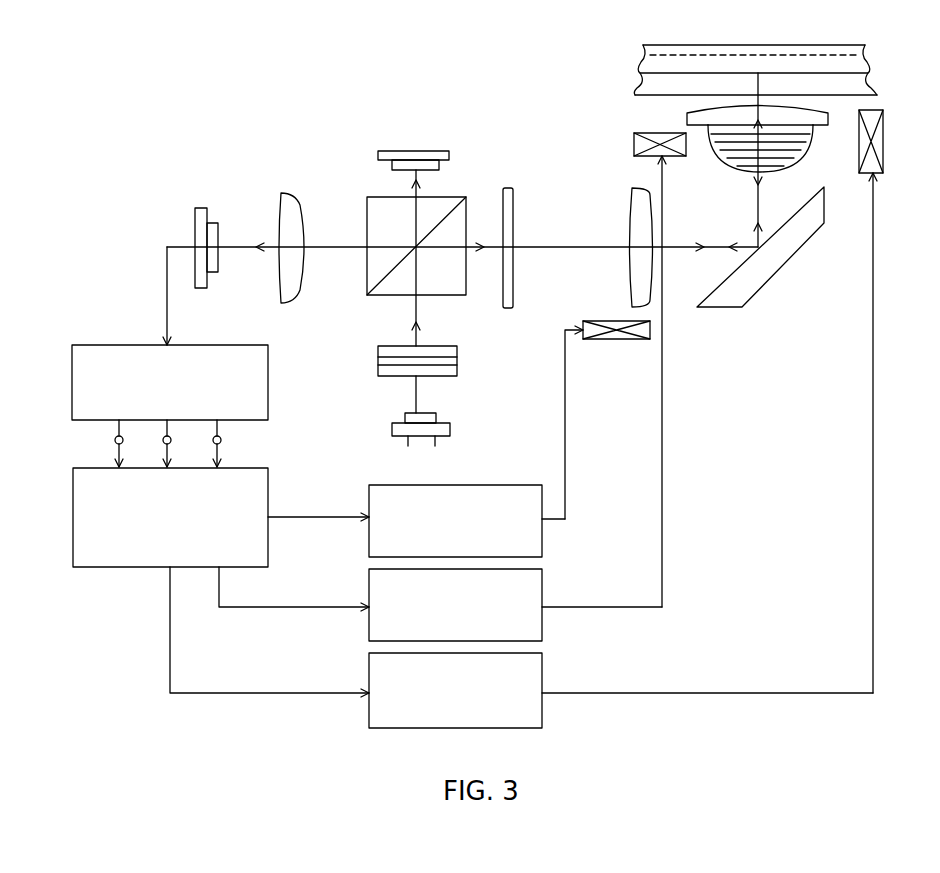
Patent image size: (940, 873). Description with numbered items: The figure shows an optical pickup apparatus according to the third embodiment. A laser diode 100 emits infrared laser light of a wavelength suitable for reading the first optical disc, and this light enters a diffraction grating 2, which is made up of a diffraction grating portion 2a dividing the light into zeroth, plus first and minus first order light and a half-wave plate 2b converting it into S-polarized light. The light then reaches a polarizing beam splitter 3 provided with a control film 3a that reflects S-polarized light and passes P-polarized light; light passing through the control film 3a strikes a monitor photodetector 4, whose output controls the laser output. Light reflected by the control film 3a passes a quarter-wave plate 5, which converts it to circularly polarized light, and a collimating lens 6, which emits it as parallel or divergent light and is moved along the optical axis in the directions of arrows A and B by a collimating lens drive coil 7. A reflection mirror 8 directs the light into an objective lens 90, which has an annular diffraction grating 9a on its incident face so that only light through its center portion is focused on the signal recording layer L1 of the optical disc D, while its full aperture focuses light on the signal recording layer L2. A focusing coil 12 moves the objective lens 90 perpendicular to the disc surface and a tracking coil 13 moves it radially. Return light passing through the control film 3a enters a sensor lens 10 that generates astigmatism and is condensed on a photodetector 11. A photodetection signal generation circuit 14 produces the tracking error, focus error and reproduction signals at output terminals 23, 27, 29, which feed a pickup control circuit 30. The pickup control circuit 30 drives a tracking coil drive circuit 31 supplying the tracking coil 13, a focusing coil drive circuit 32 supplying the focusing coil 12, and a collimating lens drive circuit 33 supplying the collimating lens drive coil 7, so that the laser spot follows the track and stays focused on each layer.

The diffraction grating 2 is at (457, 363).
The diffraction grating portion 2a is at (378, 362).
The half-wave plate 2b is at (378, 349).
The polarizing beam splitter 3 is at (367, 200).
The control film 3a is at (450, 197).
The monitor photodetector 4 is at (428, 150).
The quarter-wave plate 5 is at (508, 200).
The collimating lens 6 is at (632, 190).
The collimating lens drive coil 7 is at (614, 335).
The reflection mirror 8 is at (763, 275).
The annular diffraction grating 9a is at (805, 148).
The objective lens 90 is at (712, 123).
The sensor lens 10 is at (288, 198).
The photodetector 11 is at (202, 210).
The focusing coil 12 is at (883, 140).
The tracking coil 13 is at (634, 138).
The photodetection signal generation circuit 14 is at (82, 352).
The output terminal 23 is at (221, 440).
The output terminal 27 is at (171, 440).
The output terminal 29 is at (115, 438).
The pickup control circuit 30 is at (80, 565).
The tracking coil drive circuit 31 is at (537, 624).
The focusing coil drive circuit 32 is at (538, 718).
The collimating lens drive circuit 33 is at (535, 528).
The laser diode 100 is at (450, 428).
The optical disc D is at (640, 82).
The signal recording layer L1 is at (868, 47).
The signal recording layer L2 is at (870, 70).
The arrow A is at (553, 267).
The arrow B is at (597, 289).